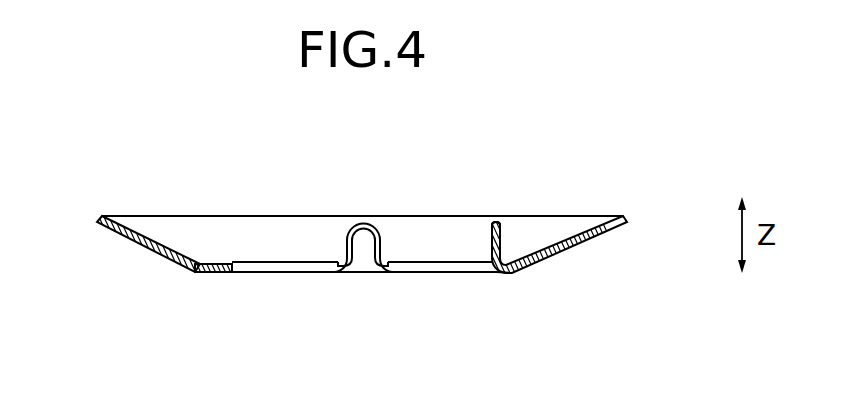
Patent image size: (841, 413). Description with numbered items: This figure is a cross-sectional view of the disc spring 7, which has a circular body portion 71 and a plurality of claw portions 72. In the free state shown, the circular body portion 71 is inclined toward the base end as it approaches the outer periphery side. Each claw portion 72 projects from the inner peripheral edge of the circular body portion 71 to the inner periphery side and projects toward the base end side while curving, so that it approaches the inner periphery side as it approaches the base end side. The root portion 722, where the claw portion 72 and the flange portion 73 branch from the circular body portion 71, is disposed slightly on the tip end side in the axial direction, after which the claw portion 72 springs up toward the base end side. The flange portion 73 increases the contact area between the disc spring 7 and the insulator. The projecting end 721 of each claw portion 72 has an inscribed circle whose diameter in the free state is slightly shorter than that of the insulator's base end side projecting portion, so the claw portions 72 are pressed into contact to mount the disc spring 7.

The disc spring 7 is at (195, 315).
The circular body portion 71 is at (146, 238).
The claw portion 72 is at (362, 242).
The projecting end 721 is at (494, 222).
The root portion 722 is at (360, 275).
The flange portion 73 is at (233, 272).